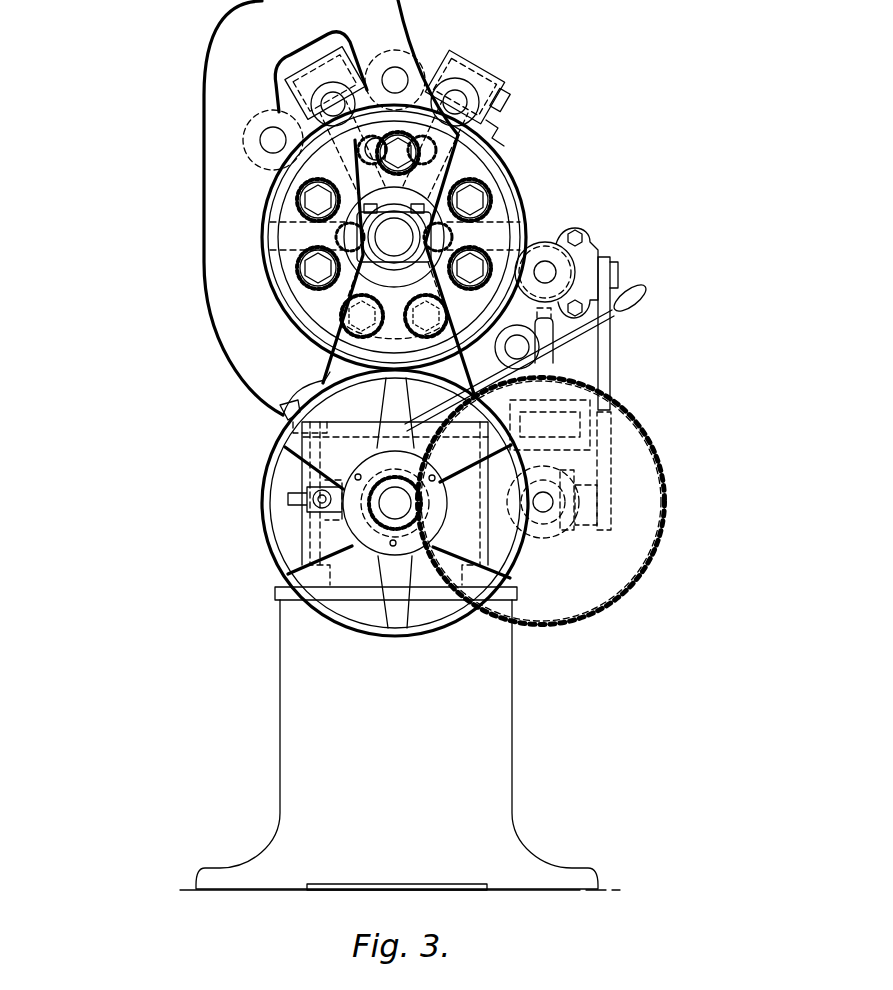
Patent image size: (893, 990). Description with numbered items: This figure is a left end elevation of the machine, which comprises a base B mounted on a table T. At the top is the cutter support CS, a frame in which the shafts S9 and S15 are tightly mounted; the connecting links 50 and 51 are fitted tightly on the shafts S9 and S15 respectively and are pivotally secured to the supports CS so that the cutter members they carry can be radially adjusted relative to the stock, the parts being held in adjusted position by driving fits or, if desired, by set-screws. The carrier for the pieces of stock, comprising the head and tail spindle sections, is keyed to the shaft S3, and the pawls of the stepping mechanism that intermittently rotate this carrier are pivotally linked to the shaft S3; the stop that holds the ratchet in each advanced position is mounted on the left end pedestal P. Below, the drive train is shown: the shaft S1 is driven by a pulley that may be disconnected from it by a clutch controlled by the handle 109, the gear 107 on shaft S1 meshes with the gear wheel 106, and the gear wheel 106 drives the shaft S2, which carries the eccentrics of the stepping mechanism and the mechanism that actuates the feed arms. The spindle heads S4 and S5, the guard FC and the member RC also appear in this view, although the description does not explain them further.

The cutter support CS is at (210, 75).
The spindle head S5 is at (330, 101).
The guard cover FC is at (367, 62).
The shaft S9 is at (397, 78).
The spindle head S4 is at (457, 100).
The shaft S15 is at (273, 138).
The ratchet RC is at (507, 132).
The connecting link 51 is at (389, 140).
The connecting link 50 is at (275, 181).
The shaft S3 is at (394, 237).
The handle 109 is at (636, 306).
The left end pedestal P is at (325, 372).
The base B is at (305, 524).
The gear 107 is at (378, 527).
The shaft S1 is at (395, 503).
The shaft S2 is at (546, 506).
The gear wheel 106 is at (603, 602).
The table T is at (400, 745).